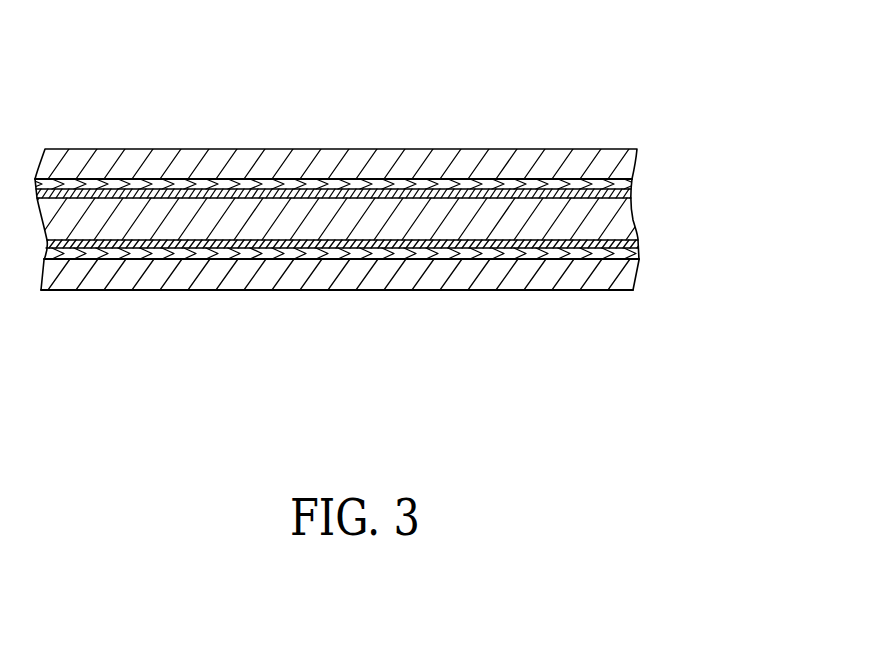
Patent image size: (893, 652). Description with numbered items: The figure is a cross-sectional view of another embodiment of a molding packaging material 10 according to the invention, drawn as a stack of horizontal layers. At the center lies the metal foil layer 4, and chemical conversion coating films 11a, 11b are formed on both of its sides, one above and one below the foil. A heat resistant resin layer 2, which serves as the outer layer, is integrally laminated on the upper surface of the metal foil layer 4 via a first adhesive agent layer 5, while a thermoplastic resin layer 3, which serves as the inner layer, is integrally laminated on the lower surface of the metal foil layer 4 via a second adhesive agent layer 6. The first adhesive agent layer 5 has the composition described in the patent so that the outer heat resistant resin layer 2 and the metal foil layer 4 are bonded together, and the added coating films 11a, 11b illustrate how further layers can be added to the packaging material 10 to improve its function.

The molding packaging material 10 is at (543, 113).
The heat resistant resin layer 2 is at (636, 148).
The thermoplastic resin layer 3 is at (622, 273).
The metal foil layer 4 is at (618, 222).
The first adhesive agent layer 5 is at (633, 183).
The second adhesive agent layer 6 is at (640, 257).
The chemical conversion coating film 11a is at (633, 192).
The chemical conversion coating film 11b is at (630, 245).